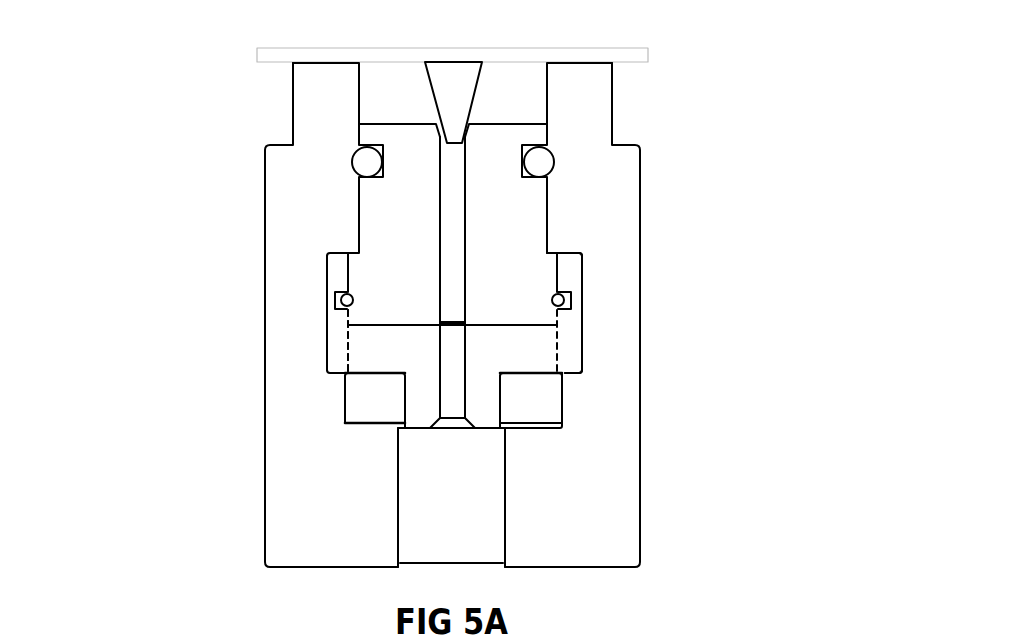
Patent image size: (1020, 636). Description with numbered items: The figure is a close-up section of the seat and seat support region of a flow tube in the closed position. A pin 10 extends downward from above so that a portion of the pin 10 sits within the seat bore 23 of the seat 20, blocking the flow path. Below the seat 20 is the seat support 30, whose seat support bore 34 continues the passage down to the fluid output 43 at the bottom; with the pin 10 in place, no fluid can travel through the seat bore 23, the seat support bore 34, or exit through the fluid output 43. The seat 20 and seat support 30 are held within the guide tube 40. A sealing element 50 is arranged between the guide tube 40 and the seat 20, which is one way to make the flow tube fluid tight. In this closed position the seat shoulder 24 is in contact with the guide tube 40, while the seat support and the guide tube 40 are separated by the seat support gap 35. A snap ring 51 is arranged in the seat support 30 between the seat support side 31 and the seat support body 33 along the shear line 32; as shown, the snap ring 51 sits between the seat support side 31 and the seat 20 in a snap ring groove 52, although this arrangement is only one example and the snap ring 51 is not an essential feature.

The pin 10 is at (415, 82).
The seat 20 is at (530, 207).
The seat bore 23 is at (455, 285).
The seat shoulder 24 is at (552, 255).
The seat support 30 is at (383, 382).
The seat support side 31 is at (333, 327).
The shear line 32 is at (348, 345).
The seat support body 33 is at (381, 357).
The seat support bore 34 is at (458, 360).
The seat support gap 35 is at (543, 407).
The guide tube 40 is at (253, 185).
The fluid output 43 is at (458, 487).
The sealing element 50 is at (368, 163).
The snap ring 51 is at (347, 300).
The snap ring groove 52 is at (558, 300).